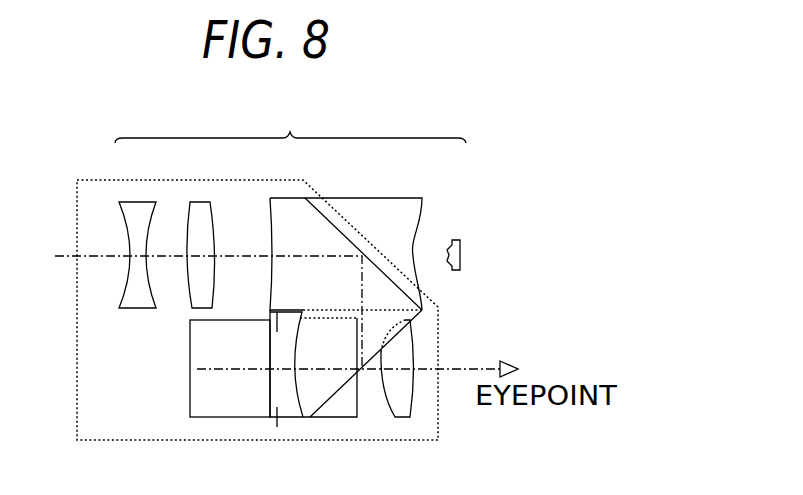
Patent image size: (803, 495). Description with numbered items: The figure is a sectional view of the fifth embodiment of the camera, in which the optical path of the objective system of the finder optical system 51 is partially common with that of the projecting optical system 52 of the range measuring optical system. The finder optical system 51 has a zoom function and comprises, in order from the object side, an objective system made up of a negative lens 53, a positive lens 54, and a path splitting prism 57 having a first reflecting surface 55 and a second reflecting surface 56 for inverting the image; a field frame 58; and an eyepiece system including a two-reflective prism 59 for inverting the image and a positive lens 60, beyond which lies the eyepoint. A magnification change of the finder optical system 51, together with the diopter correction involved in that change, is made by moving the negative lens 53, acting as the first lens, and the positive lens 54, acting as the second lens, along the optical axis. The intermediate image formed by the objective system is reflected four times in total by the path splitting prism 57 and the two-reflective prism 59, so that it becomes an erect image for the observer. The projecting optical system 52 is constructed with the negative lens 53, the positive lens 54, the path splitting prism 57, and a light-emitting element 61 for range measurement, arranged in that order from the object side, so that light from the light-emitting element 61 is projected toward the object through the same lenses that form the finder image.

The finder optical system 51 is at (75, 387).
The projecting optical system 52 is at (290, 125).
The negative lens 53 is at (137, 308).
The positive lens 54 is at (207, 240).
The first reflecting surface 55 is at (327, 219).
The second reflecting surface 56 is at (339, 388).
The path splitting prism 57 is at (400, 205).
The field frame 58 is at (278, 427).
The two-reflective prism 59 is at (215, 405).
The positive lens 60 is at (400, 402).
The light-emitting element 61 is at (462, 251).